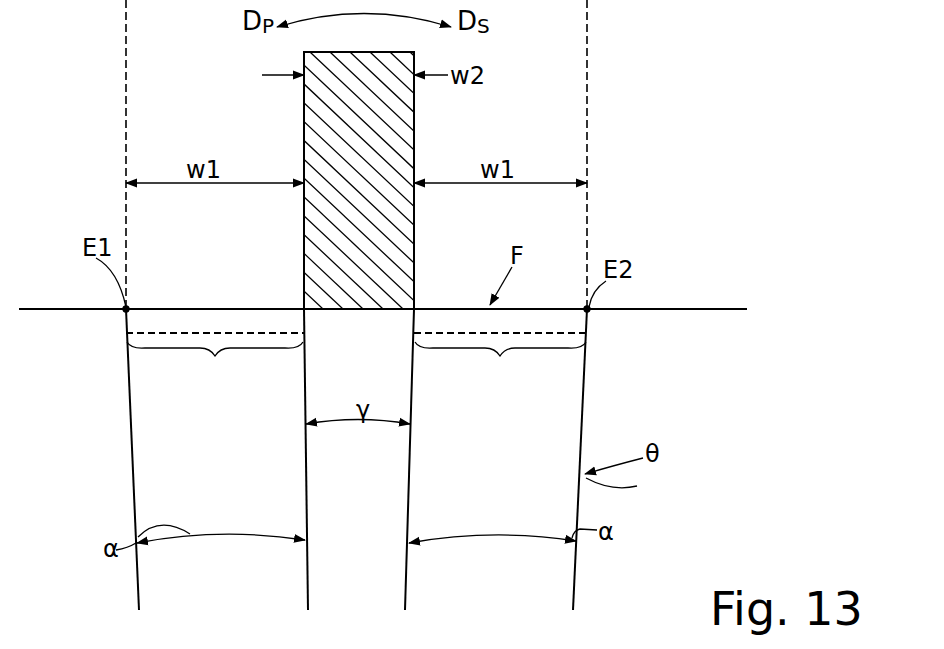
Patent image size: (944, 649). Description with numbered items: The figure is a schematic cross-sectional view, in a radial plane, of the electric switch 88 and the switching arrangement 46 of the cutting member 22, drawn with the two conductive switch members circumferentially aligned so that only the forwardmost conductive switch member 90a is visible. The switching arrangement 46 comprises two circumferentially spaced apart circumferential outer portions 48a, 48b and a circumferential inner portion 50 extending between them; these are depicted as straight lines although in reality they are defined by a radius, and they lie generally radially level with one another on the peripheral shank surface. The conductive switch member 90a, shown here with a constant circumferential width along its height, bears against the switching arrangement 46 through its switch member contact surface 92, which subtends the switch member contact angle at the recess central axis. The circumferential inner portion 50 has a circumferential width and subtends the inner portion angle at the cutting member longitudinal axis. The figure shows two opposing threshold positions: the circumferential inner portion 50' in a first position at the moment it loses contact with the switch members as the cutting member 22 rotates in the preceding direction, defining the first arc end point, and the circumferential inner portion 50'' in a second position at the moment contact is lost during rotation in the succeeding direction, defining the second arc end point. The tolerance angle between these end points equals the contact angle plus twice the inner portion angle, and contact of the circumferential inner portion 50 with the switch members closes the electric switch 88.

The cutting member 22 is at (133, 482).
The switching arrangement 46 is at (714, 366).
The circumferential outer portion 48a is at (90, 308).
The circumferential outer portion 48b is at (328, 307).
The circumferential inner portion 50 is at (356, 272).
The circumferential inner portion in first position 50' is at (215, 359).
The circumferential inner portion in second position 50'' is at (500, 360).
The electric switch 88 is at (244, 142).
The conductive switch member 90a is at (418, 128).
The switch member contact surface 92 is at (352, 311).